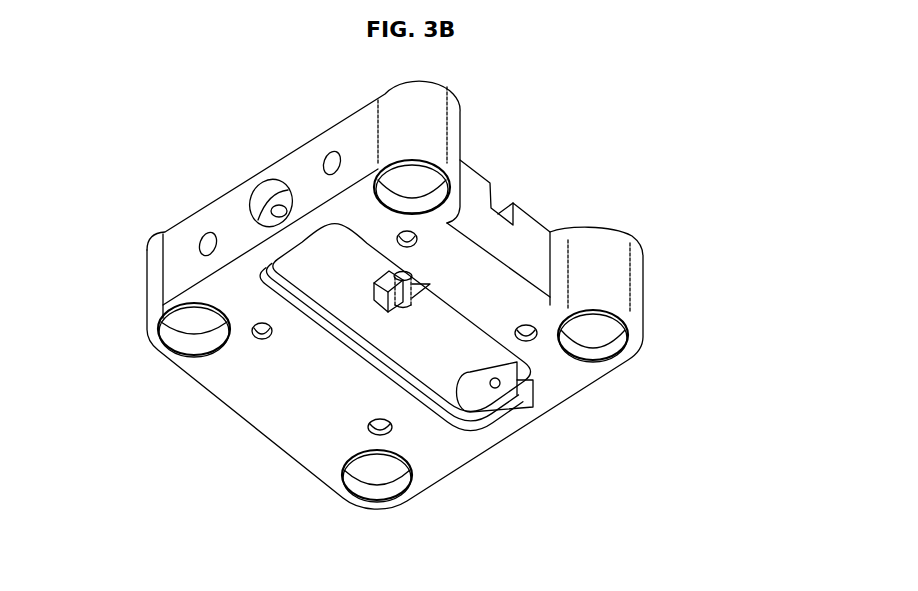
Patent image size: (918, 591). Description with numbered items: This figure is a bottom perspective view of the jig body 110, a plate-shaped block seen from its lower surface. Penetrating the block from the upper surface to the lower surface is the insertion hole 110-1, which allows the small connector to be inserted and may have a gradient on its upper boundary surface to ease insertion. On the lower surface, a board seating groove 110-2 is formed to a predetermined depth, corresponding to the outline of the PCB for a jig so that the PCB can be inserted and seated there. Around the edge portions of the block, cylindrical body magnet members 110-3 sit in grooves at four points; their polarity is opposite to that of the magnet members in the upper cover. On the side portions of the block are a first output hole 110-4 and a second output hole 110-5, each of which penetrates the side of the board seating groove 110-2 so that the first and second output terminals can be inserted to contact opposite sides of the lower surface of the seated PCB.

The jig body 110 is at (207, 160).
The insertion hole 110-1 is at (375, 310).
The board seating groove 110-2 is at (383, 362).
The body magnet members 110-3 is at (420, 190).
The first output hole 110-4 is at (273, 207).
The second output hole 110-5 is at (483, 420).